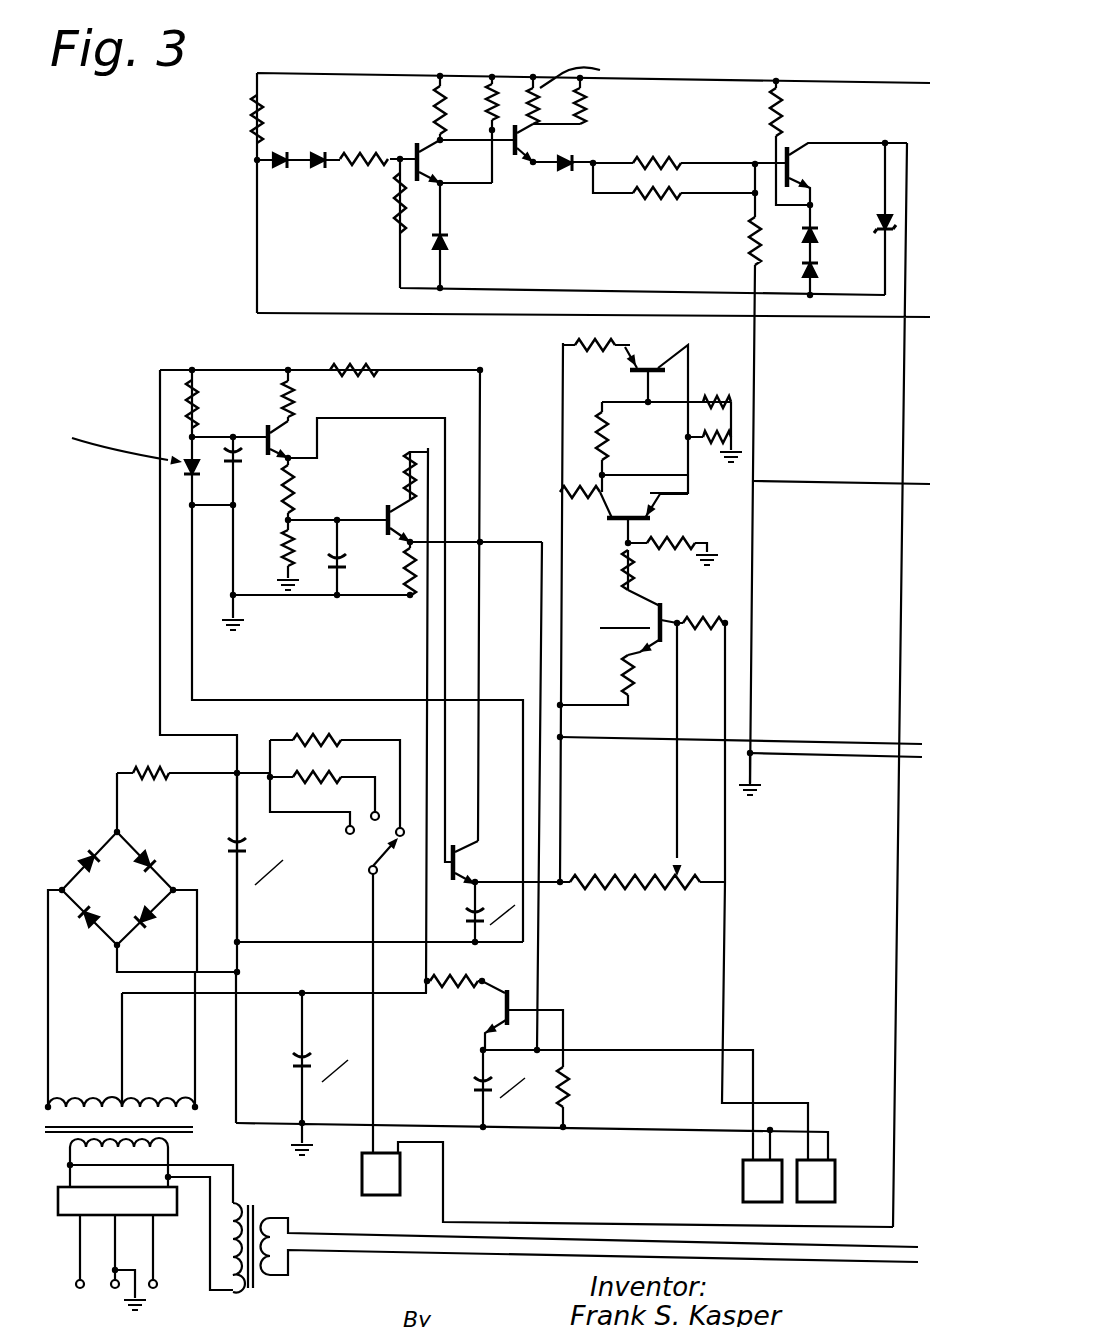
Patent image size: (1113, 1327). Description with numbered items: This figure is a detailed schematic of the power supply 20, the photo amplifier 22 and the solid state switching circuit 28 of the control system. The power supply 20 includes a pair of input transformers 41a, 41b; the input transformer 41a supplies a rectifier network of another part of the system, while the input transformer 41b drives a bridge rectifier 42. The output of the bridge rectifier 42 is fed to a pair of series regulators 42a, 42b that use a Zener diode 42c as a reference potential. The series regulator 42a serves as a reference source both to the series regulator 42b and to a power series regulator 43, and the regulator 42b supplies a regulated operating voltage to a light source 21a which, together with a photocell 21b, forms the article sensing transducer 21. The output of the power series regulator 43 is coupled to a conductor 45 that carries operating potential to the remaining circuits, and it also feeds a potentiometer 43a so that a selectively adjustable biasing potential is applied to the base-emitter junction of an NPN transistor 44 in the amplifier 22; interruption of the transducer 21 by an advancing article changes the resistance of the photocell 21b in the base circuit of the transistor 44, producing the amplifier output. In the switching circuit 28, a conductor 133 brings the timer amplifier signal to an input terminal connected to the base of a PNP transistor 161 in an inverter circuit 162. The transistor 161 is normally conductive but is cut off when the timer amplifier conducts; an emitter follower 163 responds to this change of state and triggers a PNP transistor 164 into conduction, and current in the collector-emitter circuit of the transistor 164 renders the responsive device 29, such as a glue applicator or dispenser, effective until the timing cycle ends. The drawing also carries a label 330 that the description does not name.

The power supply 20 is at (110, 726).
The article sensing transducer 21 is at (845, 1105).
The light source 21a is at (743, 1188).
The photocell 21b is at (835, 1193).
The amplifier 22 is at (765, 440).
The solid state switching circuit 28 is at (222, 227).
The responsive device 29 is at (362, 1180).
The input transformer 41a is at (283, 1266).
The input transformer 41b is at (170, 1147).
The bridge rectifier 42 is at (92, 848).
The series regulator 42a is at (270, 395).
The series regulator 42b is at (370, 582).
The Zener diode 42c is at (170, 482).
The power series regulator 43 is at (452, 868).
The potentiometer 43a is at (668, 893).
The NPN transistor 44 is at (664, 608).
The conductor 45 is at (812, 745).
The conductor 133 is at (866, 322).
The PNP transistor 161 is at (410, 150).
The inverter circuit 162 is at (466, 203).
The emitter follower 163 is at (590, 133).
The PNP transistor 164 is at (808, 183).
The resistor 330 is at (722, 455).